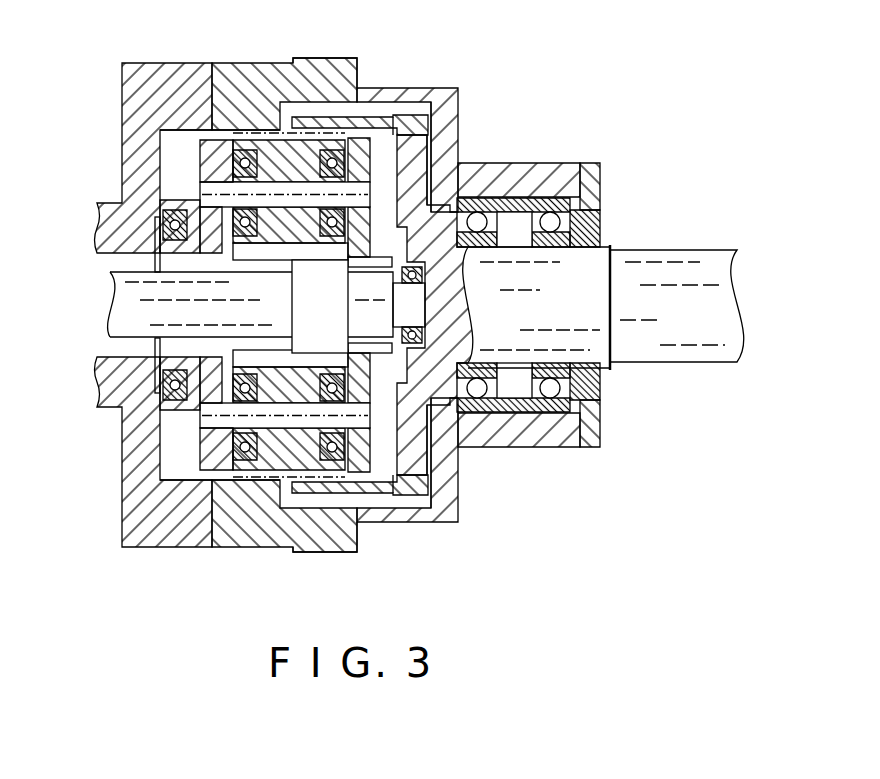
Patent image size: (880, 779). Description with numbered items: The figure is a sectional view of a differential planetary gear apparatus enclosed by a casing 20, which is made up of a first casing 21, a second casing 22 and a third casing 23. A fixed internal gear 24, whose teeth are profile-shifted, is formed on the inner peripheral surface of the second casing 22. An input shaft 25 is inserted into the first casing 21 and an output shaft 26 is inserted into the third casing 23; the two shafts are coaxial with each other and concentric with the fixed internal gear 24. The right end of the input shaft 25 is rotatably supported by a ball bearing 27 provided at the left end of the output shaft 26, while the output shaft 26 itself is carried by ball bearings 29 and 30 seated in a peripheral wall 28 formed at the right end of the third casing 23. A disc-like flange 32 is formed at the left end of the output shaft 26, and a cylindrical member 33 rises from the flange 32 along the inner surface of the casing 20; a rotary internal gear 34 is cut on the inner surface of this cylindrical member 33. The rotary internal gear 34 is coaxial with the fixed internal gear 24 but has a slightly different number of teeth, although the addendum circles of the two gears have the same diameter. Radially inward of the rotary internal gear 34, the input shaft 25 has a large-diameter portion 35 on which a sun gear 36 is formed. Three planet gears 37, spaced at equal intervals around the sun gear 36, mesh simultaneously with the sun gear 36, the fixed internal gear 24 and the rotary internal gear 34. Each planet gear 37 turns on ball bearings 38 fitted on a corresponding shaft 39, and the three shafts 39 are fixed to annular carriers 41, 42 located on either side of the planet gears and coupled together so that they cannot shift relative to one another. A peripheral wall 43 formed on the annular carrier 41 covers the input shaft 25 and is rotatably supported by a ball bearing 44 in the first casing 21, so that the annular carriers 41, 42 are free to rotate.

The casing 20 is at (237, 55).
The first casing 21 is at (156, 63).
The second casing 22 is at (308, 57).
The third casing 23 is at (446, 89).
The fixed internal gear 24 is at (230, 129).
The input shaft 25 is at (120, 298).
The output shaft 26 is at (680, 249).
The ball bearing 27 is at (425, 277).
The peripheral wall 28 is at (550, 180).
The ball bearing 29 is at (477, 399).
The ball bearing 30 is at (550, 399).
The disc-like flange 32 is at (428, 140).
The cylindrical member 33 is at (404, 120).
The rotary internal gear 34 is at (358, 122).
The large-diameter portion 35 is at (291, 265).
The sun gear 36 is at (313, 256).
The planet gear 37 is at (271, 462).
The ball bearing 38 is at (243, 452).
The shaft 39 is at (298, 408).
The annular carrier 41 is at (199, 163).
The annular carrier 42 is at (373, 452).
The peripheral wall 43 is at (177, 362).
The ball bearing 44 is at (177, 411).